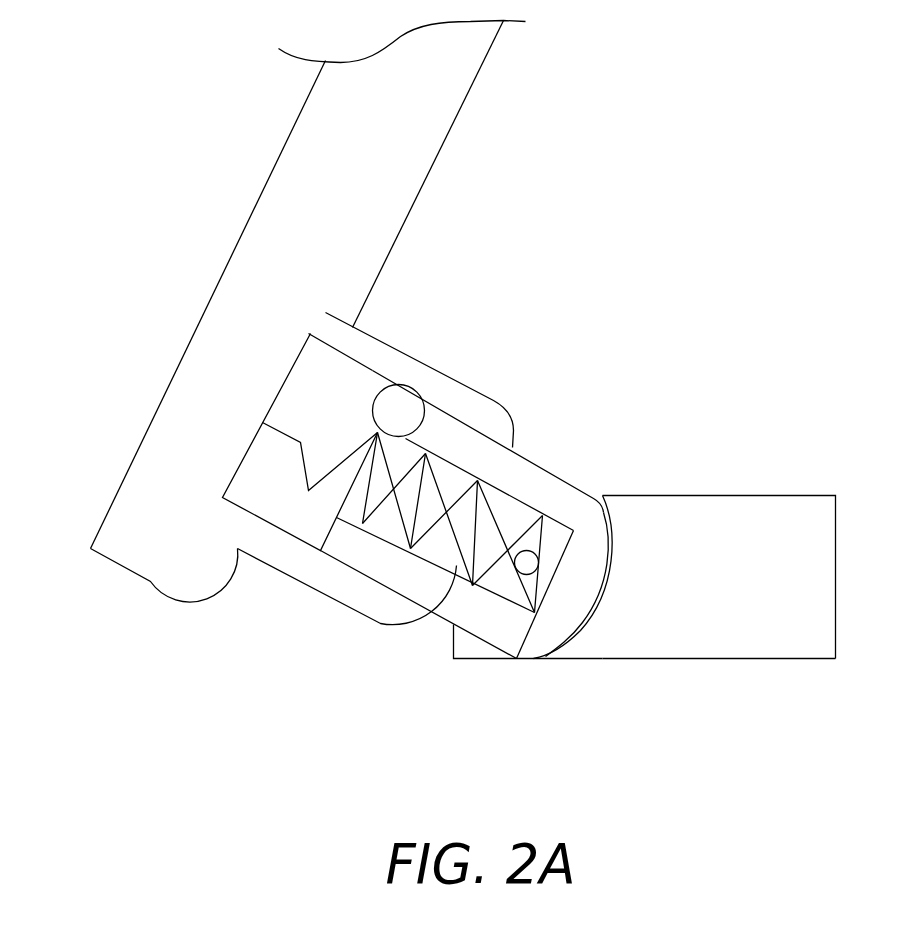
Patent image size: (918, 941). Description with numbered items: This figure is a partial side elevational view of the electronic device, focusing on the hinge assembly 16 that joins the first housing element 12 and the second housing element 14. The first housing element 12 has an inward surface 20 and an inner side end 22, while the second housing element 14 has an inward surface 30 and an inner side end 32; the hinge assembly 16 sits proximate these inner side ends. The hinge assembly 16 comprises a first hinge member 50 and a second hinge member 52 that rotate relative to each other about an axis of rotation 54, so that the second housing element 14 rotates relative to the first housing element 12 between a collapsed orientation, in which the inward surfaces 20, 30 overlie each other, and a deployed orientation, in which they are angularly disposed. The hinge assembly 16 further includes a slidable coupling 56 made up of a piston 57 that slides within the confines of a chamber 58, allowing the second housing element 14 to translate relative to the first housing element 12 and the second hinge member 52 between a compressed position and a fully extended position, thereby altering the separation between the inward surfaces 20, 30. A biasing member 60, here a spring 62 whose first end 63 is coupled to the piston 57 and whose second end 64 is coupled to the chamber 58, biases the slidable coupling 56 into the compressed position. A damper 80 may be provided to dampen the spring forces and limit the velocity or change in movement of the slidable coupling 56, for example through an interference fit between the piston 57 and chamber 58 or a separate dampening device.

The first housing element 12 is at (718, 662).
The second housing element 14 is at (237, 234).
The hinge assembly 16 is at (280, 640).
The inward surface 20 is at (752, 494).
The inner side end 22 is at (662, 470).
The inward surface 30 is at (418, 193).
The inner side end 32 is at (100, 565).
The first hinge member 50 is at (462, 591).
The second hinge member 52 is at (490, 378).
The axis of rotation 54 is at (498, 664).
The slidable coupling 56 is at (542, 428).
The piston 57 is at (550, 473).
The chamber 58 is at (367, 362).
The biasing member 60 is at (416, 528).
The spring 62 is at (365, 512).
The first end 63 is at (508, 571).
The second end 64 is at (274, 442).
The damper 80 is at (413, 385).